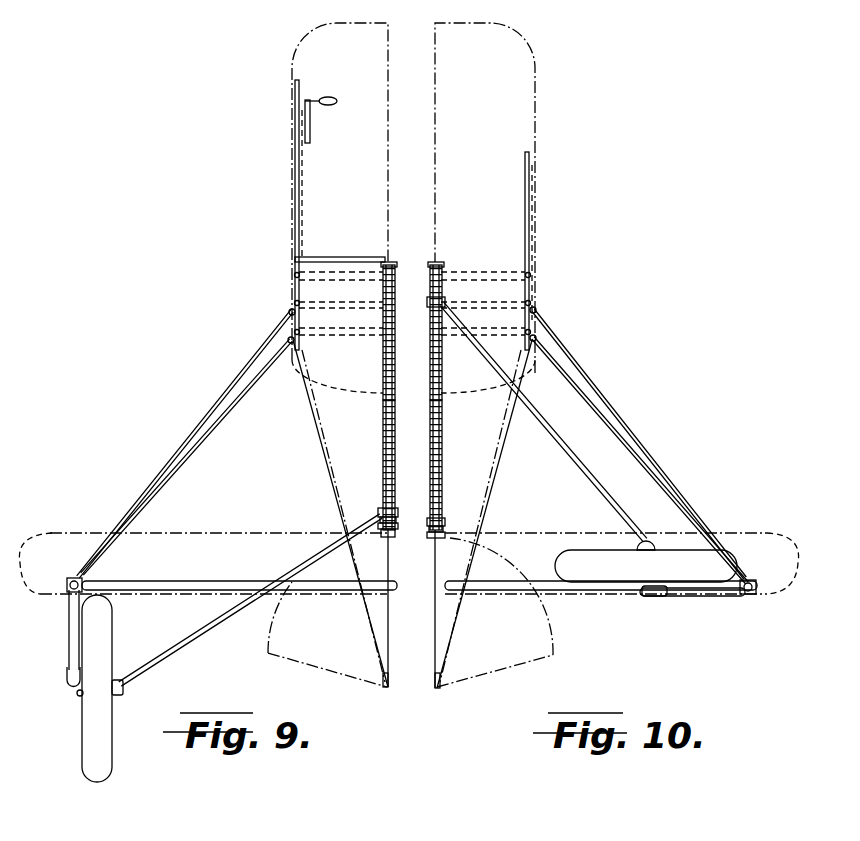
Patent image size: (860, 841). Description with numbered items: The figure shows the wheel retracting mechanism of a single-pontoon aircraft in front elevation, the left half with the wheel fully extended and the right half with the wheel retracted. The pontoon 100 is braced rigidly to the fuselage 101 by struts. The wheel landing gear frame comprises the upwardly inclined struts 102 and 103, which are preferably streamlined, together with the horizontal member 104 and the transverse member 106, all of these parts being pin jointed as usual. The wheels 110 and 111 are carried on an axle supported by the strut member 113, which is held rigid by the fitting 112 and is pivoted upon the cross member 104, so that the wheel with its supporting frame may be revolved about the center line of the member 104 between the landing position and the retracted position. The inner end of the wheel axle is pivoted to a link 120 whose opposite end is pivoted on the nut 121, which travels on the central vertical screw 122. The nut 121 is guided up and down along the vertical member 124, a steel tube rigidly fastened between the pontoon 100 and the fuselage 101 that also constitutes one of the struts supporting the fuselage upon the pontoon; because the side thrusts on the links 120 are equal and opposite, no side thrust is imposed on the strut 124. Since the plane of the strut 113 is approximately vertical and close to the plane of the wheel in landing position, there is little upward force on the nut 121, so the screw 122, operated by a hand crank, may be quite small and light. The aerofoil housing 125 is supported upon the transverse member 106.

In FIG. 9, the single pontoon 100 is at (450, 543).
In FIG. 10, the fuselage 101 is at (535, 130).
In FIG. 9, the upwardly inclined strut 102 is at (265, 343).
In FIG. 10, the upwardly inclined strut 102 is at (605, 400).
In FIG. 9, the upwardly inclined strut 103 is at (265, 370).
In FIG. 10, the upwardly inclined strut 103 is at (570, 380).
In FIG. 9, the horizontal member 104 is at (70, 579).
In FIG. 10, the horizontal member 104 is at (752, 594).
In FIG. 9, the transverse member 106 is at (182, 590).
In FIG. 10, the transverse member 106 is at (493, 590).
In FIG. 9, the wheel 110 is at (102, 775).
In FIG. 10, the wheel 111 is at (610, 575).
In FIG. 9, the fitting 112 is at (73, 683).
In FIG. 9, the strut member 113 is at (69, 626).
In FIG. 10, the strut member 113 is at (700, 596).
In FIG. 9, the link 120 is at (182, 652).
In FIG. 10, the link 120 is at (600, 488).
In FIG. 9, the nut 121 is at (380, 510).
In FIG. 10, the nut 121 is at (430, 299).
In FIG. 9, the central vertical screw 122 is at (383, 417).
In FIG. 10, the central vertical screw 122 is at (442, 418).
In FIG. 9, the vertical member 124 is at (383, 366).
In FIG. 10, the vertical member 124 is at (442, 380).
In FIG. 9, the aerofoil housing 125 is at (248, 534).